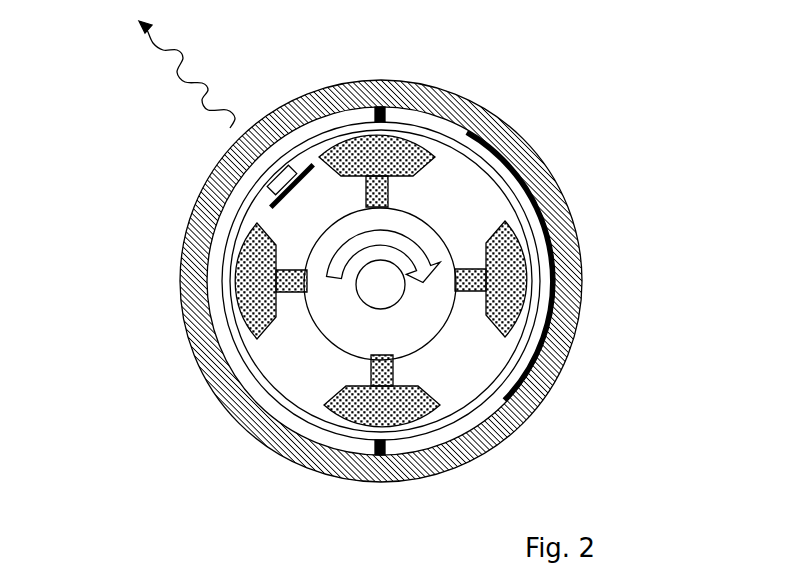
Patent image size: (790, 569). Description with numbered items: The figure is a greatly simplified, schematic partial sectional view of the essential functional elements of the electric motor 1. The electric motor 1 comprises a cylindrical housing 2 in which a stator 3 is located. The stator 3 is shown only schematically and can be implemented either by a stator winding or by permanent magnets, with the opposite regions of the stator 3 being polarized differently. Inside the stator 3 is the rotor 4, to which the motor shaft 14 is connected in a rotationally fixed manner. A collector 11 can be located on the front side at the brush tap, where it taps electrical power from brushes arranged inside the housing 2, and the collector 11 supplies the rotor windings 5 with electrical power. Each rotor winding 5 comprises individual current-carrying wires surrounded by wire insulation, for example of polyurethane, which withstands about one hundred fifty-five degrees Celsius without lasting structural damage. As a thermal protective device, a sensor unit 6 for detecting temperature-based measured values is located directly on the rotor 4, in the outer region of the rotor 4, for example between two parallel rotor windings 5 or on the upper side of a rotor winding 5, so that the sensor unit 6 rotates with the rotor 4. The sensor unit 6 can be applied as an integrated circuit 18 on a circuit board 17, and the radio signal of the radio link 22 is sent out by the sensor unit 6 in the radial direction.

The electric motor 1 is at (373, 44).
The cylindrical housing 2 is at (465, 104).
The stator 3 is at (255, 390).
The rotor 4 is at (433, 275).
The rotor winding 5 is at (527, 273).
The sensor unit 6 is at (200, 130).
The collector 11 is at (462, 325).
The motor shaft 14 is at (387, 290).
The circuit board 17 is at (308, 164).
The integrated circuit 18 is at (274, 177).
The radio link 22 is at (180, 77).